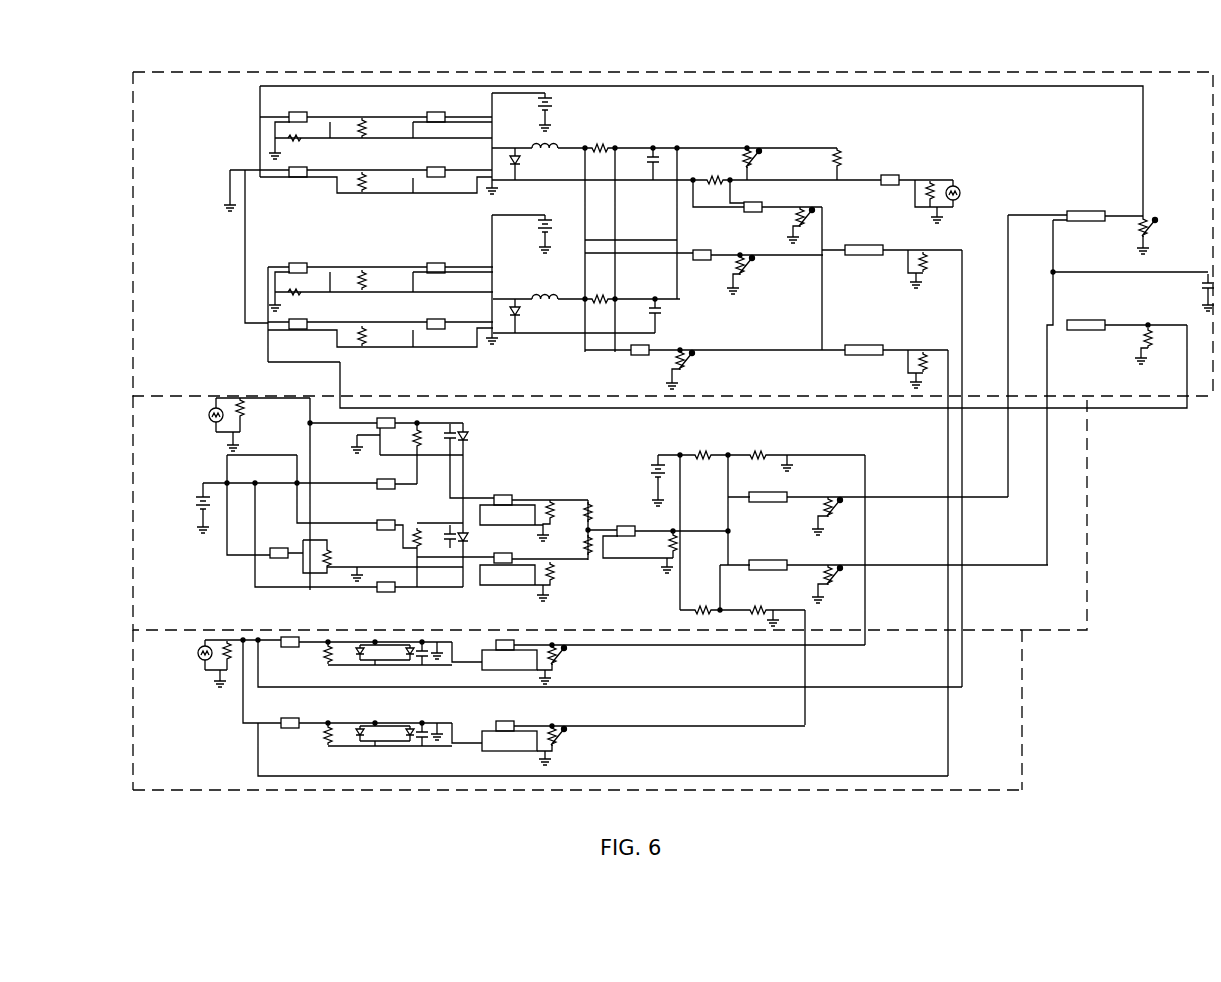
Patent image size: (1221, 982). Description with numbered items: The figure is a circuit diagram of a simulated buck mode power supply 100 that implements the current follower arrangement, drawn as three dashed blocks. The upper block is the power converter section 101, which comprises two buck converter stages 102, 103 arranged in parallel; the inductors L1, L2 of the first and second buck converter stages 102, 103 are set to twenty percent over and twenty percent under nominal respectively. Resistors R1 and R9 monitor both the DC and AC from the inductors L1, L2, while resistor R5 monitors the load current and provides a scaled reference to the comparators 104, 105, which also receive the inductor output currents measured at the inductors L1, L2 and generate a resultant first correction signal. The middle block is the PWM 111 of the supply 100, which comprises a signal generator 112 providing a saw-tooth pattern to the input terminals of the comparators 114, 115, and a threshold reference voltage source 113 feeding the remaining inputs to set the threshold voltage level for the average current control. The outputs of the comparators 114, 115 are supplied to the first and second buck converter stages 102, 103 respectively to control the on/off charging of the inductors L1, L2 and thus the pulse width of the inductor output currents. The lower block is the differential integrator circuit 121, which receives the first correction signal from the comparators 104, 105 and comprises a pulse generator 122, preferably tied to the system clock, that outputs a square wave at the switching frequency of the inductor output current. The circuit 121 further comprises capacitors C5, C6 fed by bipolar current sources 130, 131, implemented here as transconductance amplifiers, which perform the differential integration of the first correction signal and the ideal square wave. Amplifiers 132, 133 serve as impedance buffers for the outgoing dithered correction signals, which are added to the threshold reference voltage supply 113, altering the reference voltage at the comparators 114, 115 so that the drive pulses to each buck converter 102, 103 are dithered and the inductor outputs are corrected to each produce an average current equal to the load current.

The simulated buck mode power supply 100 is at (1087, 680).
The power converter section 101 is at (132, 233).
The first buck converter stage 102 is at (232, 133).
The second buck converter stage 103 is at (225, 288).
The comparator 104 is at (852, 246).
The comparator 105 is at (852, 344).
The PWM 111 is at (132, 514).
The signal generator 112 is at (200, 431).
The threshold reference voltage source 113 is at (656, 458).
The comparator 114 is at (782, 491).
The comparator 115 is at (765, 558).
The differential integrator circuit 121 is at (132, 690).
The pulse generator 122 is at (200, 660).
The bipolar current source 130 is at (283, 635).
The bipolar current source 131 is at (283, 717).
The amplifier 132 is at (508, 638).
The amplifier 133 is at (508, 720).
The inductor L1 is at (543, 146).
The resistor R1 is at (603, 146).
The resistor R5 is at (722, 177).
The inductor L2 is at (535, 297).
The resistor R9 is at (598, 297).
The capacitor C5 is at (428, 638).
The capacitor C6 is at (427, 720).